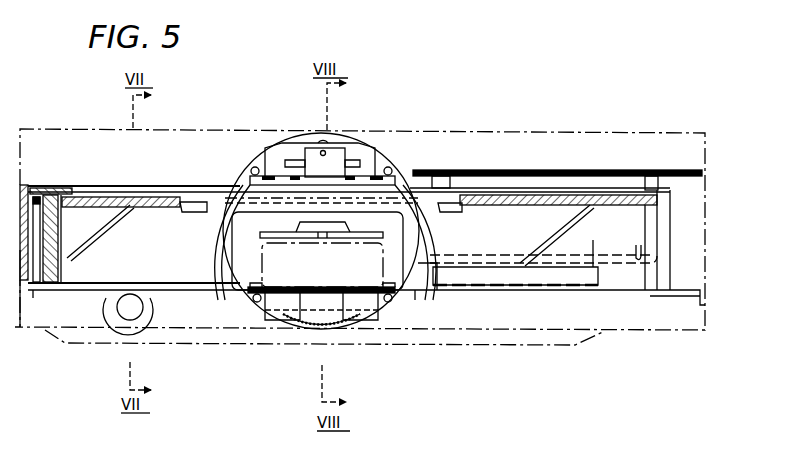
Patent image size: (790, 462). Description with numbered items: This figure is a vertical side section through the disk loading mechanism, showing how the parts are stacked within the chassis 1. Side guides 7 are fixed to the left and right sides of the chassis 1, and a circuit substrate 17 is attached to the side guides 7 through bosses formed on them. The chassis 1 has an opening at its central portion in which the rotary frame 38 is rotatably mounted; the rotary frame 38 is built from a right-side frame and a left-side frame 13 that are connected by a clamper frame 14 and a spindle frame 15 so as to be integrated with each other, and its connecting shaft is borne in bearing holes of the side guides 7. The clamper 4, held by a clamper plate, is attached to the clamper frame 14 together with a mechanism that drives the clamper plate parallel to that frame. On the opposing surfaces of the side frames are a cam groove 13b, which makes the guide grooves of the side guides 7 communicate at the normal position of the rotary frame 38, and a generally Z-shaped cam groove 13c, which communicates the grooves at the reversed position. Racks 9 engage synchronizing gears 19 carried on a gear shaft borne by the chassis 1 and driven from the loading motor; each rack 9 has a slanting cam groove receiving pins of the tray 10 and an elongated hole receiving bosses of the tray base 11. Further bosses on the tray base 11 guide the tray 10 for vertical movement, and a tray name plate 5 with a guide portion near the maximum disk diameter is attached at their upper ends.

The chassis 1 is at (649, 297).
The clamper 4 is at (370, 152).
The tray name plate 5 is at (36, 188).
The side guide 7 is at (658, 272).
The rack 9 is at (545, 277).
The tray 10 is at (178, 200).
The tray base 11 is at (50, 273).
The left-side frame 13 is at (252, 305).
The cam groove 13b is at (400, 180).
The Z-shaped cam groove 13c is at (400, 300).
The clamper frame 14 is at (272, 150).
The spindle frame 15 is at (308, 305).
The circuit substrate 17 is at (505, 170).
The synchronizing gear 19 is at (140, 322).
The rotary frame 38 is at (358, 300).